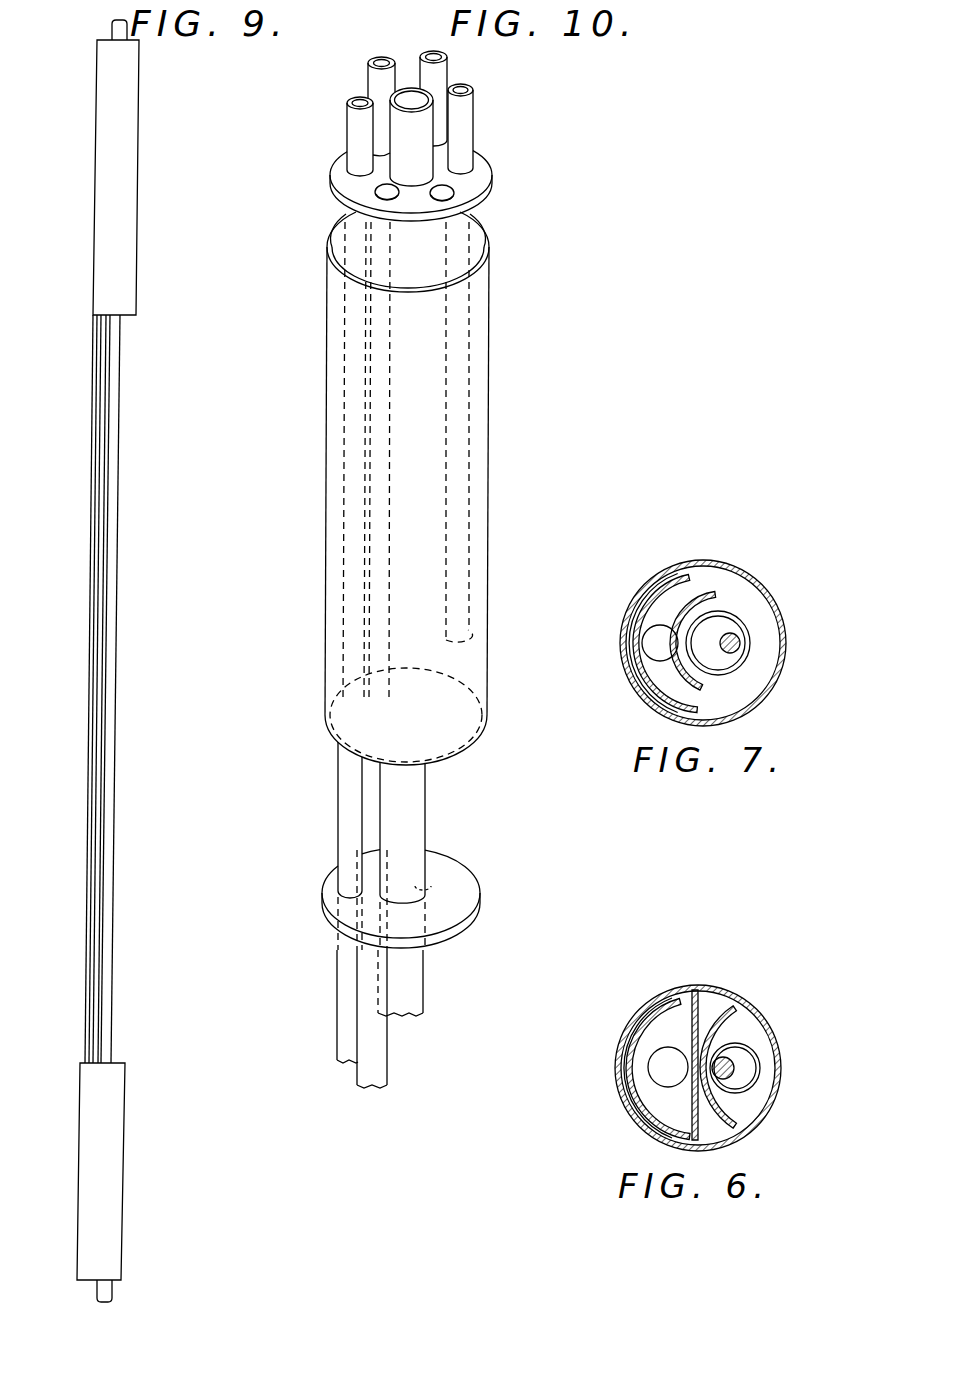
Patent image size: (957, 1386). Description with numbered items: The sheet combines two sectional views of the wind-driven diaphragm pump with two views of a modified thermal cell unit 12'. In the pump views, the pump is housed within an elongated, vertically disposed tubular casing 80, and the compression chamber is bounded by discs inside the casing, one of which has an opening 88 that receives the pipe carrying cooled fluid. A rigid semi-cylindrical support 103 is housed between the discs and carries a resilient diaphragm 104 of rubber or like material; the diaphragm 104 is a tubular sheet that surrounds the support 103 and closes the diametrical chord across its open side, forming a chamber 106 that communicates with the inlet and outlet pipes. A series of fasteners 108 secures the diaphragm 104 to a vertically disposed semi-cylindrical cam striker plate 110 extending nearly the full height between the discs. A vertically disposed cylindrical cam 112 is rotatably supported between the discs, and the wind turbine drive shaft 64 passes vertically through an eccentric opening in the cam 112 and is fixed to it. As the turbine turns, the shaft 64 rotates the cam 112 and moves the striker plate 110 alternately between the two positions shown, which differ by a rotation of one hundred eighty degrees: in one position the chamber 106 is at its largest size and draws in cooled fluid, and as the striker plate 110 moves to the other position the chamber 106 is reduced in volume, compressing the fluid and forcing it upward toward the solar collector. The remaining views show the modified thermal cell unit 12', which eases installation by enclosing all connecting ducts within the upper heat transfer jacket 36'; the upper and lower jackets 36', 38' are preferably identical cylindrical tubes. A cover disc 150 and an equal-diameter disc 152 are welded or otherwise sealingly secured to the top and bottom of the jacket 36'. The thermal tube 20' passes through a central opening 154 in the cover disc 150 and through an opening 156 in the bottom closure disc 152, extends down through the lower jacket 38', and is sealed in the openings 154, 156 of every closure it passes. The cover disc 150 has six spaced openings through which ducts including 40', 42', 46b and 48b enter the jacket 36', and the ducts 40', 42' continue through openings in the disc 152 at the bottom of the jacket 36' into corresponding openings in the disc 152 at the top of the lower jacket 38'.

In FIG. 9, the modified thermal cell unit 12' is at (129, 661).
In FIG. 9, the thermal tube 20' is at (148, 689).
In FIG. 10, the thermal tube 20' is at (439, 552).
In FIG. 9, the upper heat transfer jacket 36' is at (144, 167).
In FIG. 9, the lower jacket 38' is at (132, 1182).
In FIG. 9, the duct 40' is at (68, 689).
In FIG. 10, the duct 40' is at (392, 553).
In FIG. 9, the duct 42' is at (67, 689).
In FIG. 10, the duct 42' is at (319, 569).
In FIG. 10, the duct 46b is at (473, 107).
In FIG. 10, the duct 48b is at (447, 68).
In FIG. 10, the cover disc 150 is at (333, 168).
In FIG. 10, the closure disc 152 is at (478, 890).
In FIG. 10, the central opening 154 is at (488, 181).
In FIG. 10, the opening 156 is at (424, 882).
In FIG. 7, the wind turbine drive shaft 64 is at (738, 640).
In FIG. 6, the wind turbine drive shaft 64 is at (736, 1072).
In FIG. 7, the tubular casing 80 is at (780, 677).
In FIG. 6, the tubular casing 80 is at (768, 1108).
In FIG. 7, the opening 88 is at (628, 616).
In FIG. 6, the opening 88 is at (624, 1028).
In FIG. 7, the semi-cylindrical support 103 is at (688, 574).
In FIG. 6, the semi-cylindrical support 103 is at (690, 994).
In FIG. 7, the resilient diaphragm 104 is at (720, 591).
In FIG. 6, the resilient diaphragm 104 is at (714, 1008).
In FIG. 7, the chamber 106 is at (673, 578).
In FIG. 6, the chamber 106 is at (690, 1036).
In FIG. 6, the fasteners 108 is at (650, 1108).
In FIG. 7, the cam striker plate 110 is at (742, 612).
In FIG. 6, the cam striker plate 110 is at (716, 1020).
In FIG. 7, the cylindrical cam 112 is at (727, 617).
In FIG. 6, the cylindrical cam 112 is at (742, 1046).